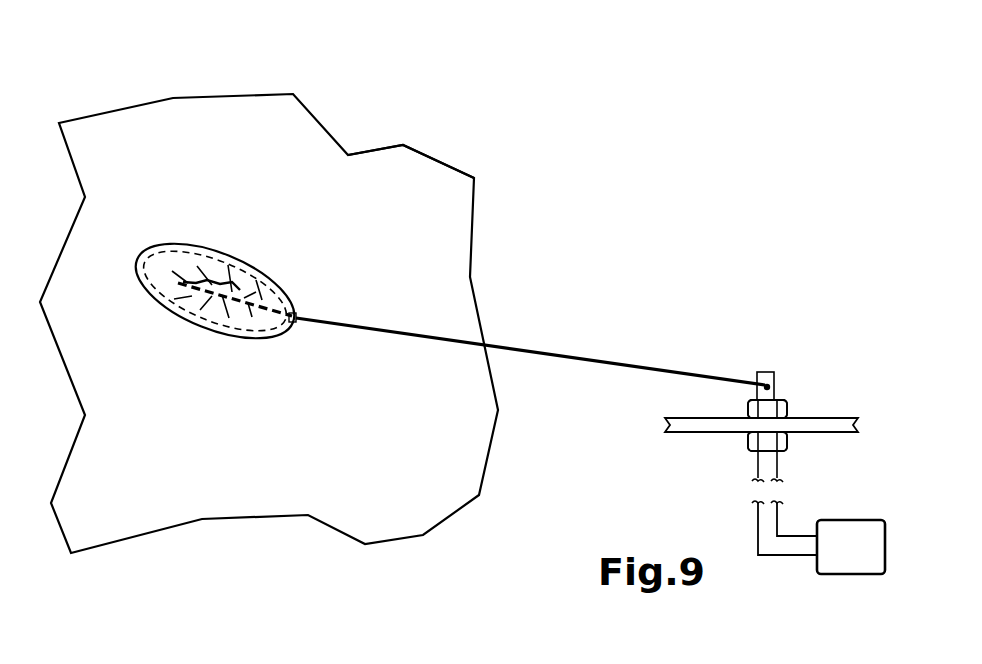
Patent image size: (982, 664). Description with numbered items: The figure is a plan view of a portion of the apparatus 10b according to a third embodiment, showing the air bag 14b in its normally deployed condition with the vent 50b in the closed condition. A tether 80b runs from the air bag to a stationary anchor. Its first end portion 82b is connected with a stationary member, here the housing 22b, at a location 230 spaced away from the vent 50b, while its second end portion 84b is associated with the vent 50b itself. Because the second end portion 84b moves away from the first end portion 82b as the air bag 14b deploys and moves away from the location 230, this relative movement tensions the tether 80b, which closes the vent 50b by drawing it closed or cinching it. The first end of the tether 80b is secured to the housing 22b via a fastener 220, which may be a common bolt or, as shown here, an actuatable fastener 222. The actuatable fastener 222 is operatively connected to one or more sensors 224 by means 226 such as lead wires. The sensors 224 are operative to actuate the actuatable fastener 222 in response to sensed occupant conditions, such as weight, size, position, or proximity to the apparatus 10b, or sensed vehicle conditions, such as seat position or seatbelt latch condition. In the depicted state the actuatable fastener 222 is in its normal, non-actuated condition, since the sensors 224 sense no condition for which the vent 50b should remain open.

The apparatus 10b is at (257, 62).
The air bag 14b is at (393, 188).
The vent 50b is at (176, 232).
The second end portion 84b is at (294, 312).
The tether 80b is at (592, 361).
The first end portion 82b is at (739, 375).
The fastener 220 is at (768, 408).
The actuatable fastener 222 is at (767, 441).
The location 230 is at (802, 392).
The housing 22b is at (690, 426).
The means 226 is at (757, 540).
The sensors 224 is at (851, 547).